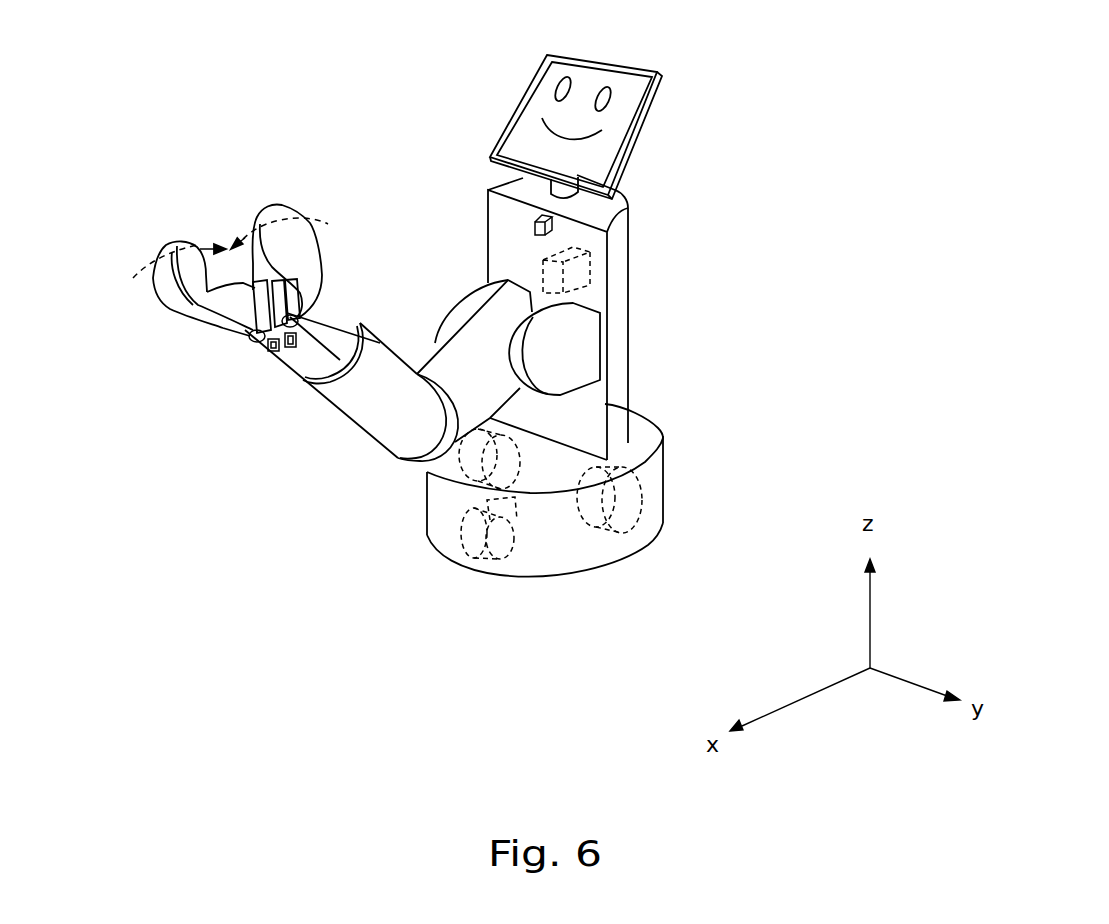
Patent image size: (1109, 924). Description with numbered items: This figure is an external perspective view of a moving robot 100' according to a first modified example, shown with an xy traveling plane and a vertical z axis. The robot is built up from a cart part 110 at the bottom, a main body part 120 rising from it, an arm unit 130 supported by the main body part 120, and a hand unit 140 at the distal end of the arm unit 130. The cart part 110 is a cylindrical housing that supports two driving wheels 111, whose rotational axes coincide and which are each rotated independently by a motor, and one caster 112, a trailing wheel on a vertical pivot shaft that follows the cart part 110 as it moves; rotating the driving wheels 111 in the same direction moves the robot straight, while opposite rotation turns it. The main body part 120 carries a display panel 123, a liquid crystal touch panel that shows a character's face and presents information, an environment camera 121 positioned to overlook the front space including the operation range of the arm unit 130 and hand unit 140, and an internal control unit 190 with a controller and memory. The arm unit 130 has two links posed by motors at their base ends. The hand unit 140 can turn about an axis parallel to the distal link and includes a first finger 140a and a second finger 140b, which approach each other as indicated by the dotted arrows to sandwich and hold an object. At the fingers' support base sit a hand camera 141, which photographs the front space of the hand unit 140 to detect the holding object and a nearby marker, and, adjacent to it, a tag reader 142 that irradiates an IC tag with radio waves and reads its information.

The moving robot 100' is at (454, 328).
The cart part 110 is at (660, 471).
The driving wheels 111 is at (452, 452).
The caster 112 is at (493, 556).
The main body part 120 is at (632, 349).
The environment camera 121 is at (536, 222).
The display panel 123 is at (633, 82).
The arm unit 130 is at (462, 377).
The hand unit 140 is at (341, 298).
The first finger 140a is at (165, 248).
The second finger 140b is at (285, 207).
The hand camera 141 is at (258, 342).
The tag reader 142 is at (294, 350).
The control unit 190 is at (590, 264).